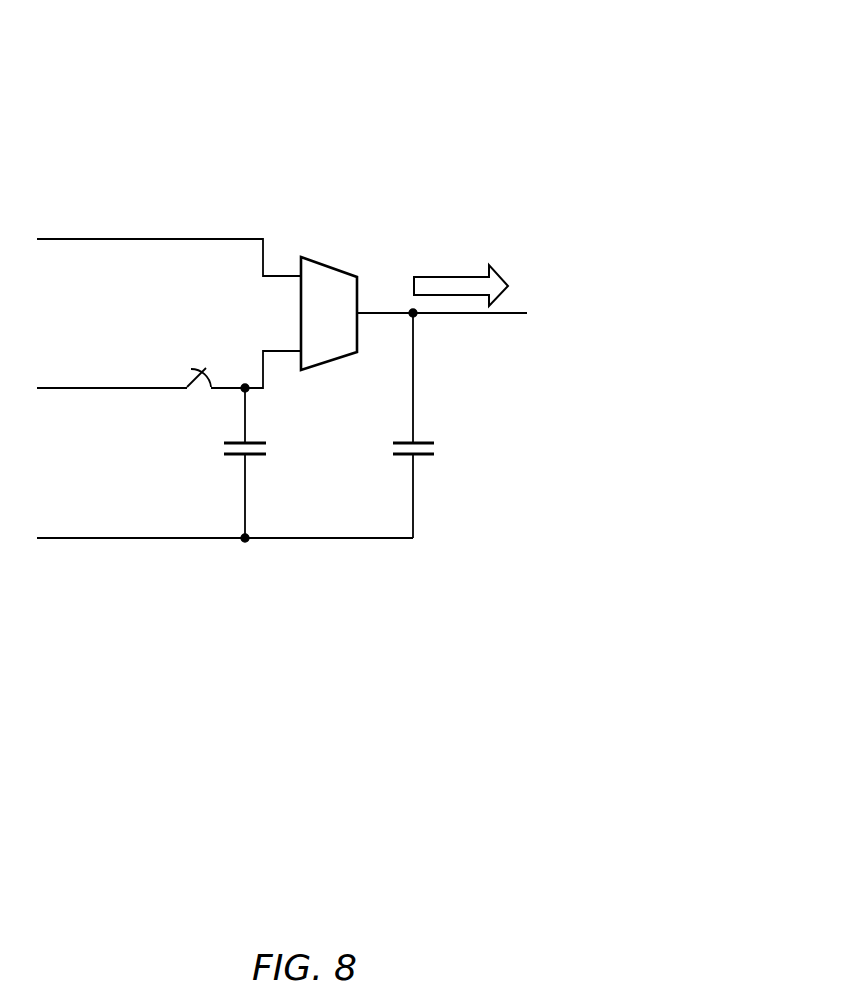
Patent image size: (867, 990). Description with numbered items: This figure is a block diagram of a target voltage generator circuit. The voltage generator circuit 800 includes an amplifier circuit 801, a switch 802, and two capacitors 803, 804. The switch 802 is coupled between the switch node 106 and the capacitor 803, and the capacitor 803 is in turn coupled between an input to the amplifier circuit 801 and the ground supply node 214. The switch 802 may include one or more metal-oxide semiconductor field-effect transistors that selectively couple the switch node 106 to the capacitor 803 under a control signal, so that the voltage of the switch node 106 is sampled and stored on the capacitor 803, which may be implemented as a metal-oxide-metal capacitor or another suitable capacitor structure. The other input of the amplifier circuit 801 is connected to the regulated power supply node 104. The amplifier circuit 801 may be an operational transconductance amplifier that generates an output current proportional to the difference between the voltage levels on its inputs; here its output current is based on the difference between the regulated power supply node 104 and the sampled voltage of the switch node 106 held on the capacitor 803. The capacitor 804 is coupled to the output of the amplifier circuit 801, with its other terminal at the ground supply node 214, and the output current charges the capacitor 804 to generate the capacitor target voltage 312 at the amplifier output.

The voltage generator circuit 800 is at (432, 80).
The regulated power supply node 104 is at (169, 217).
The amplifier circuit 801 is at (346, 263).
The capacitor target voltage 312 is at (469, 276).
The switch 802 is at (203, 367).
The switch node 106 is at (169, 371).
The capacitor 803 is at (270, 448).
The capacitor 804 is at (438, 448).
The ground supply node 214 is at (225, 523).